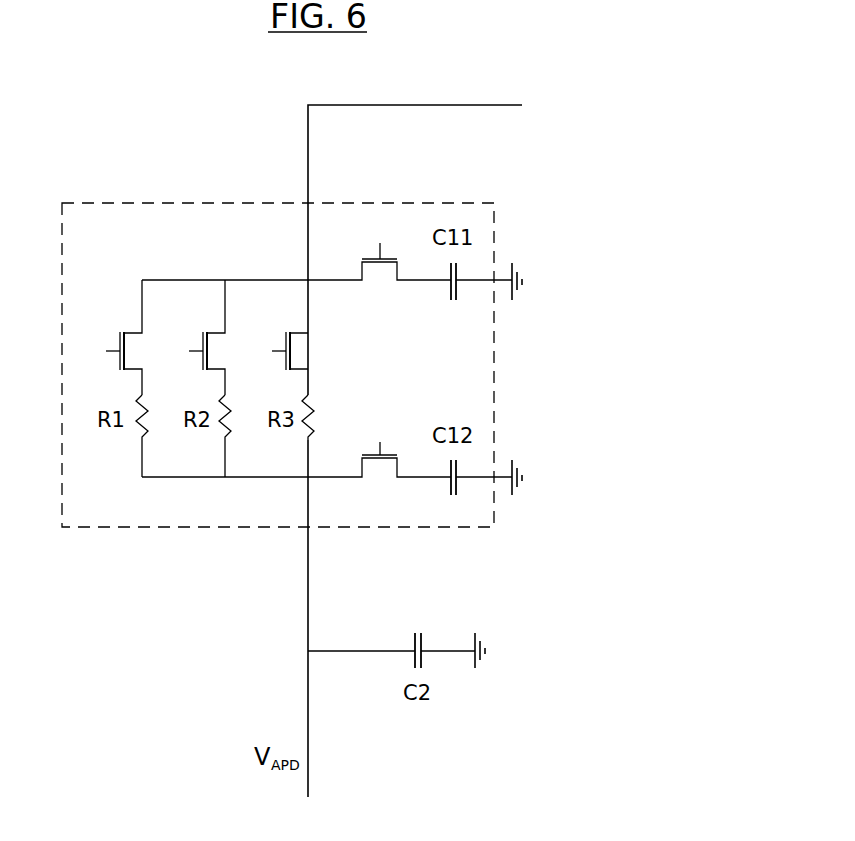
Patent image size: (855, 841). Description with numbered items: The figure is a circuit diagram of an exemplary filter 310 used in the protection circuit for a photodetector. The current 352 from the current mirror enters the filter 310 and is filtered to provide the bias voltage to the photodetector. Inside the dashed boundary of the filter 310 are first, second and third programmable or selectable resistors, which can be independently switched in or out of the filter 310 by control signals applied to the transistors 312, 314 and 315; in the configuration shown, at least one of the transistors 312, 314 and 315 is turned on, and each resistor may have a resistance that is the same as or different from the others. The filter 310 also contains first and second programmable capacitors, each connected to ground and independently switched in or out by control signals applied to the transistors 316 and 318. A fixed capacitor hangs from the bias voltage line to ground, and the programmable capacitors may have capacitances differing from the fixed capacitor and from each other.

The current 352 is at (308, 148).
The filter 310 is at (473, 203).
The transistor 312 is at (117, 340).
The transistor 314 is at (200, 340).
The transistor 315 is at (283, 340).
The transistor 316 is at (360, 270).
The transistor 318 is at (360, 467).